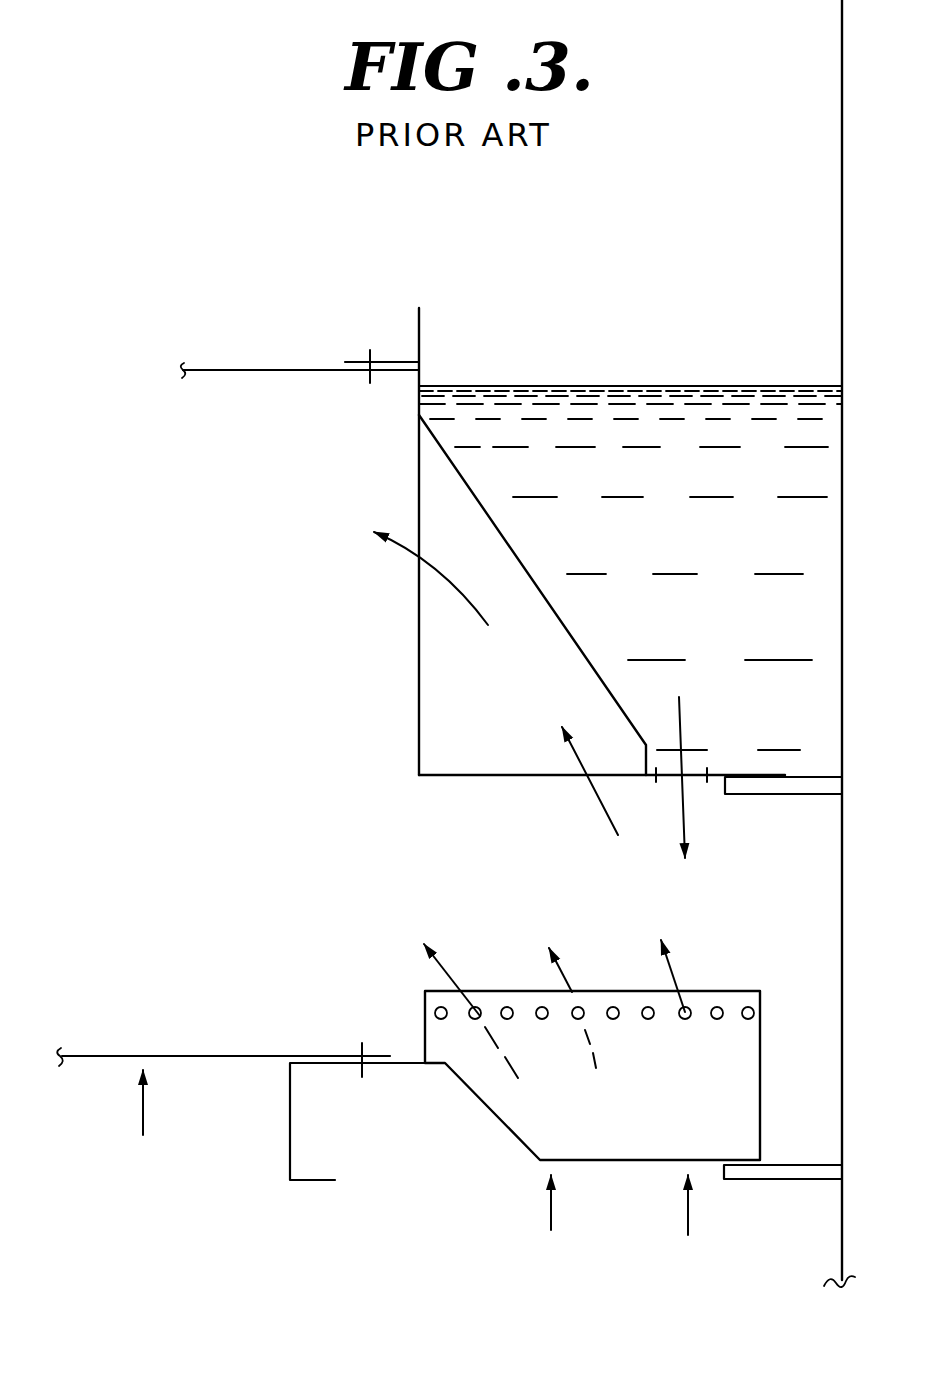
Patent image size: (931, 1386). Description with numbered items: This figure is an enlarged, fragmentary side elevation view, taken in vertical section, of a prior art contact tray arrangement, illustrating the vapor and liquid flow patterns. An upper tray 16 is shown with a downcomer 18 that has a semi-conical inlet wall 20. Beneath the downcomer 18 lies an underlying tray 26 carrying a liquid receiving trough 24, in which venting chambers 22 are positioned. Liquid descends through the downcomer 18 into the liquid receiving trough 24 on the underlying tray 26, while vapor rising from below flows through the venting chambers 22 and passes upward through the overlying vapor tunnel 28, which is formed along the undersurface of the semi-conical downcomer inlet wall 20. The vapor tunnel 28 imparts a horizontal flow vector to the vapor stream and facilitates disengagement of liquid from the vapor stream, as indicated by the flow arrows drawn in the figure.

The tray 16 is at (268, 362).
The downcomer 18 is at (510, 336).
The semi-conical inlet wall 20 is at (515, 552).
The venting chambers 22 is at (752, 1037).
The liquid receiving trough 24 is at (778, 1162).
The underlying tray 26 is at (205, 1056).
The vapor tunnel 28 is at (499, 763).